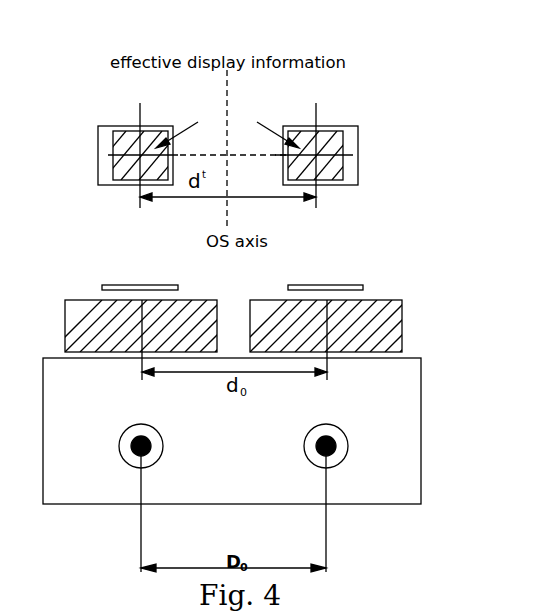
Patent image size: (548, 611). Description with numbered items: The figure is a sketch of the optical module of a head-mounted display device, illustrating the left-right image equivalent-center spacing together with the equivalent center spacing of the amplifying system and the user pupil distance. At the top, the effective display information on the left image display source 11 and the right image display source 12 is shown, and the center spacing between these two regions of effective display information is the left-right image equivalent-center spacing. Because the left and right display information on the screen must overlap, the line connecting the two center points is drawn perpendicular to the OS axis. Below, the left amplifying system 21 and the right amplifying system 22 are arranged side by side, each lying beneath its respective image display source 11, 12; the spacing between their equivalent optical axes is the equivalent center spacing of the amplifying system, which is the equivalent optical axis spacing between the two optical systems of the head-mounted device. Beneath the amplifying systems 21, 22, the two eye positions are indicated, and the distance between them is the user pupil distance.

The left image display source 11 is at (102, 130).
The right image display source 12 is at (347, 131).
The left amplifying system 21 is at (133, 336).
The right amplifying system 22 is at (370, 328).